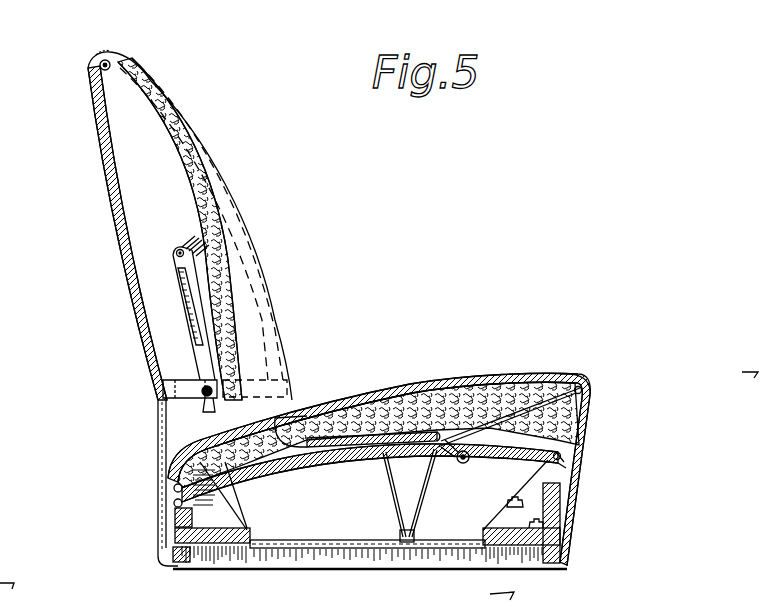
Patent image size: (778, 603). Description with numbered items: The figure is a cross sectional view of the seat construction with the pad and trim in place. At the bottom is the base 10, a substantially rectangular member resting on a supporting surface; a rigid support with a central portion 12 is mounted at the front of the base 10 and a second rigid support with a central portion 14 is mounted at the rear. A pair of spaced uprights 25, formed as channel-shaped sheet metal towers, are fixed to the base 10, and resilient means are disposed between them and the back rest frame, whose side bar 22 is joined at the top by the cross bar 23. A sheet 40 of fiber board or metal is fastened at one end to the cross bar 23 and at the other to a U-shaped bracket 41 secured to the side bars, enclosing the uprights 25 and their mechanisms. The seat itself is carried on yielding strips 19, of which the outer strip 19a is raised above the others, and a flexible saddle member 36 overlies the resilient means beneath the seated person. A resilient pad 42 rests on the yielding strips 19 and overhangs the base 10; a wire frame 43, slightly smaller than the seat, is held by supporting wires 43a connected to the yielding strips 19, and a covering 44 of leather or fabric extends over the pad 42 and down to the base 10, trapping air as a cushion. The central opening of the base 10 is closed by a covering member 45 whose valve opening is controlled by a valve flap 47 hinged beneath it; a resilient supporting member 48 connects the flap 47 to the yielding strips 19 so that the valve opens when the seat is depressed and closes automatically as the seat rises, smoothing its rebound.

The base 10 is at (223, 557).
The central portion of front rigid support 12 is at (570, 518).
The central portion of rear rigid support 14 is at (160, 513).
The yielding strips 19 is at (292, 463).
The outer yielding strip 19a is at (565, 450).
The side bar 22 is at (197, 167).
The cross bar 23 is at (87, 73).
The uprights 25 is at (187, 343).
The saddle member 36 is at (378, 442).
The sheet 40 is at (120, 237).
The U-shaped bracket 41 is at (160, 400).
The resilient pad 42 is at (513, 385).
The frame 43 is at (470, 383).
The supporting wires 43a is at (590, 405).
The covering 44 is at (400, 383).
The covering member 45 is at (470, 547).
The valve flap 47 is at (353, 553).
The resilient supporting member 48 is at (430, 490).